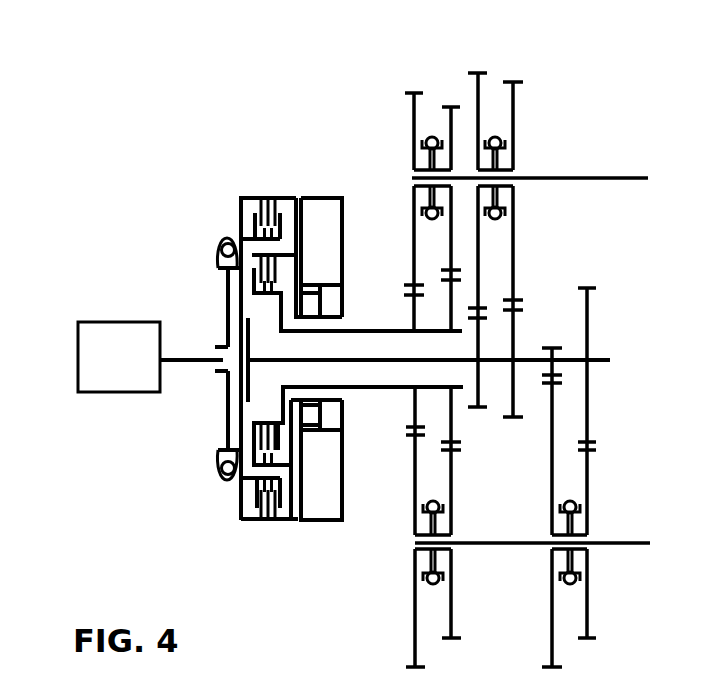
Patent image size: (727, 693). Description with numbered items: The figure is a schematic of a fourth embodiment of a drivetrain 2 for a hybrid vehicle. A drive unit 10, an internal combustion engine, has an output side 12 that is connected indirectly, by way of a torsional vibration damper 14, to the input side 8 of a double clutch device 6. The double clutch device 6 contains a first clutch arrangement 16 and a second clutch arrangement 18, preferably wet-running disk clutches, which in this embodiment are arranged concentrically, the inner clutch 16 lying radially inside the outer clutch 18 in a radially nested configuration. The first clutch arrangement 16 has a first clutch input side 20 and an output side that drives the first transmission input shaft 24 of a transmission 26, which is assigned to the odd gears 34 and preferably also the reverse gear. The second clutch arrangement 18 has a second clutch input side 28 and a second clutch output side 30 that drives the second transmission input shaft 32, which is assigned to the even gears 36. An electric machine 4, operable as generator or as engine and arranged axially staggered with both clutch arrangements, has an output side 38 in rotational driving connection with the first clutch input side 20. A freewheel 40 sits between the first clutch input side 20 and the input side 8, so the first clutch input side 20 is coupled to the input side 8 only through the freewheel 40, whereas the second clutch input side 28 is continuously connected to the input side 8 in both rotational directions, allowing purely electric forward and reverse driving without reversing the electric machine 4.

The drivetrain 2 is at (44, 206).
The electric machine 4 is at (318, 197).
The double clutch device 6 is at (253, 197).
The input side 8 is at (224, 283).
The drive unit 10 is at (128, 359).
The output side 12 is at (183, 358).
The torsional vibration damper 14 is at (217, 441).
The first clutch arrangement 16 is at (288, 472).
The second clutch arrangement 18 is at (257, 529).
The first clutch input side 20 is at (292, 448).
The first transmission input shaft 24 is at (377, 390).
The transmission 26 is at (434, 86).
The second clutch input side 28 is at (240, 206).
The second clutch output side 30 is at (238, 371).
The second transmission input shaft 32 is at (368, 331).
The odd gears 34 is at (536, 153).
The even gears 36 is at (601, 518).
The output side 38 is at (327, 281).
The freewheel 40 is at (315, 300).